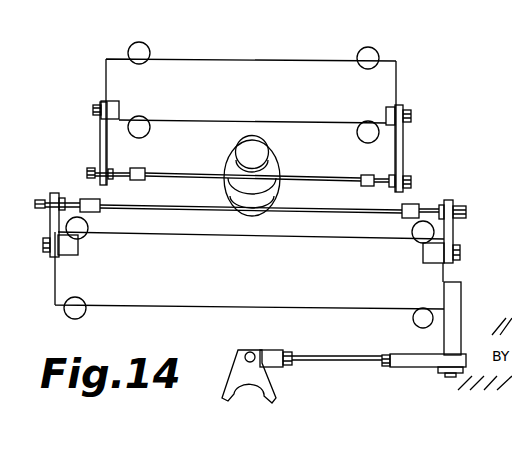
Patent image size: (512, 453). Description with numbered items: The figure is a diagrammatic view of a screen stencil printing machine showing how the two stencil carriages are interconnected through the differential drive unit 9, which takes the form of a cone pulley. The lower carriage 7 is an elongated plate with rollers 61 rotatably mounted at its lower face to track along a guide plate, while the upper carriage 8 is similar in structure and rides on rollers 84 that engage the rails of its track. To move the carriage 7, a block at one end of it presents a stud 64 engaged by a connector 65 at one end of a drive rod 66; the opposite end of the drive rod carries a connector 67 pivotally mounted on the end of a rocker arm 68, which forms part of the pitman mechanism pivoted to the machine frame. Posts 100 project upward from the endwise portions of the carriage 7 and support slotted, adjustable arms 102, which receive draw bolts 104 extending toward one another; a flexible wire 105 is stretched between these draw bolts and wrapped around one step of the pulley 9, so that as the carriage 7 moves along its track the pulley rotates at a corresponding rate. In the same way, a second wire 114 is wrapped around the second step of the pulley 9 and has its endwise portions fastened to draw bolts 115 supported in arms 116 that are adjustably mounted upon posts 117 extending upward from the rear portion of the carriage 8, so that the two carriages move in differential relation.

The carriage 7 is at (348, 311).
The carriage 8 is at (304, 59).
The differential drive unit 9 is at (244, 150).
The rollers 61 is at (414, 324).
The stud 64 is at (448, 375).
The connector 65 is at (463, 358).
The drive rod 66 is at (364, 364).
The connector 67 is at (272, 357).
The rocker arm 68 is at (278, 400).
The rollers 84 is at (378, 51).
The posts 100 is at (450, 262).
The arms 102 is at (454, 228).
The draw bolts 104 is at (426, 203).
The wire 105 is at (382, 212).
The wire 114 is at (326, 176).
The draw bolts 115 is at (380, 176).
The arms 116 is at (404, 143).
The posts 117 is at (391, 107).